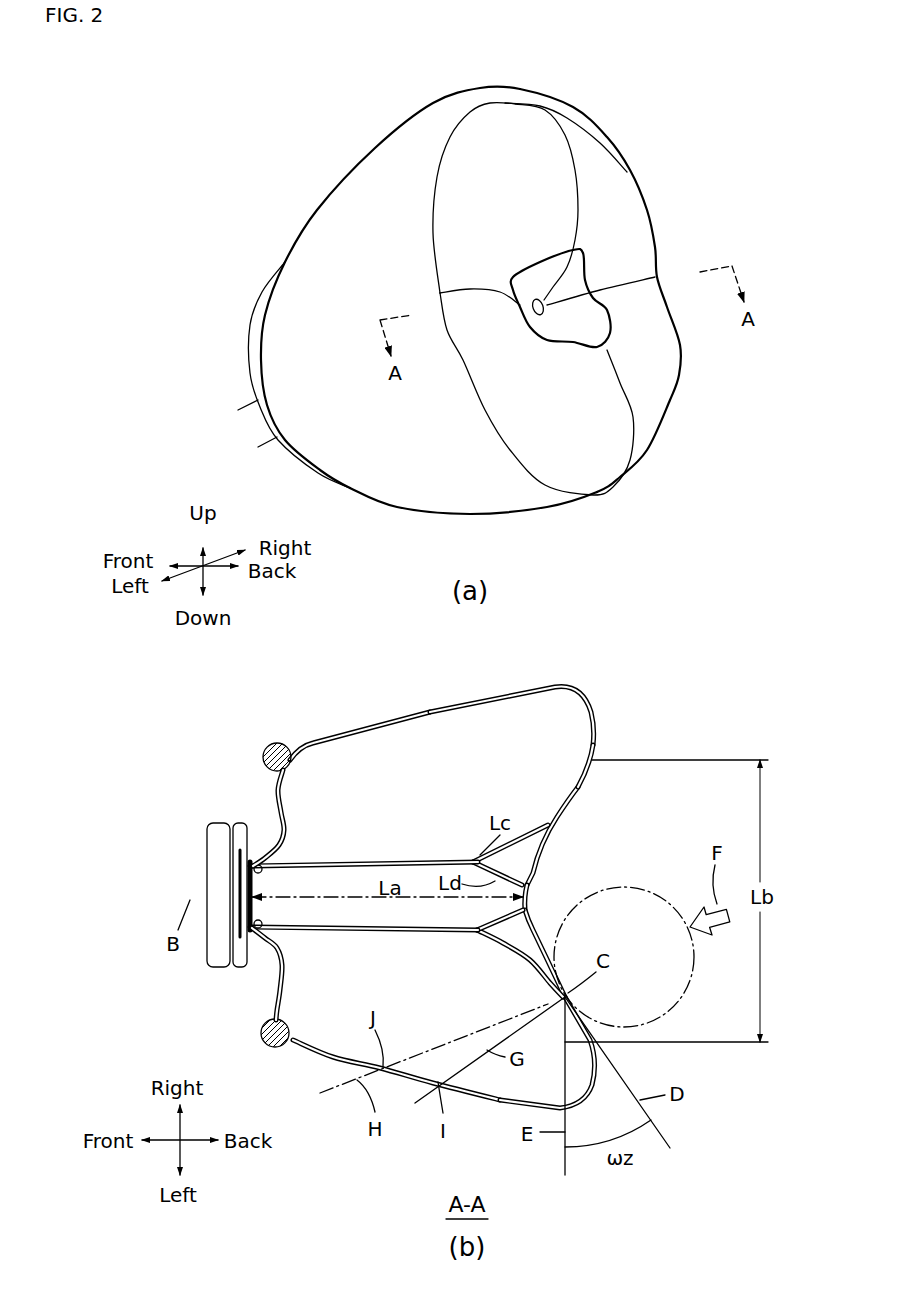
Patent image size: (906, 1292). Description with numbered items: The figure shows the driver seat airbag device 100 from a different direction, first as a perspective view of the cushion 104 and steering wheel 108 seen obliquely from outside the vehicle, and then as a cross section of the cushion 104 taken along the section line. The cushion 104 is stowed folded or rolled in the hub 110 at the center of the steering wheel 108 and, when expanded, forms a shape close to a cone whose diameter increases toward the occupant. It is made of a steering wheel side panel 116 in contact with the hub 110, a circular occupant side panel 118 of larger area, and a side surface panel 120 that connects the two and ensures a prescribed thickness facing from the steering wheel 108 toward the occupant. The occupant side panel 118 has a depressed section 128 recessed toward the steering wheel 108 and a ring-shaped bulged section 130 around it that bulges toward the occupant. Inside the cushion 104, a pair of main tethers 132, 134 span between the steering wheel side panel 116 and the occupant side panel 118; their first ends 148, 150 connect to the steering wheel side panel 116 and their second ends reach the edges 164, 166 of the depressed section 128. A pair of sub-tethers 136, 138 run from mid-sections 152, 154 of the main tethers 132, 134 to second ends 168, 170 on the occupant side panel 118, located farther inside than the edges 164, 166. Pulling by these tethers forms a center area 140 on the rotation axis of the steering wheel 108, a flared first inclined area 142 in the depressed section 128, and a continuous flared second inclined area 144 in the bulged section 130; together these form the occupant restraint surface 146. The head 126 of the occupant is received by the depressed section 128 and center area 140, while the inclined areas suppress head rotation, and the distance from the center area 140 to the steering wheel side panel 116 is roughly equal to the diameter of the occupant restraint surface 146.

The driver seat airbag device 100 is at (338, 128).
The cushion 104 is at (313, 208).
The steering wheel 108 is at (248, 323).
The hub 110 is at (228, 887).
The steering wheel side panel 116 is at (252, 915).
The occupant side panel 118 is at (494, 123).
The side surface panel 120 is at (410, 480).
The head 126 is at (621, 883).
The depressed section 128 is at (536, 275).
The bulged section 130 is at (627, 216).
The main tether 132 is at (397, 860).
The main tether 134 is at (397, 930).
The sub-tether 136 is at (540, 866).
The sub-tether 138 is at (500, 918).
The center area 140 is at (533, 320).
The first inclined area 142 is at (573, 320).
The second inclined area 144 is at (637, 308).
The occupant restraint surface 146 is at (632, 333).
The first end 148 is at (258, 857).
The first end 150 is at (260, 937).
The mid-section 152 is at (473, 860).
The mid-section 154 is at (478, 932).
The edge 164 is at (585, 293).
The edge 166 is at (518, 305).
The second end 168 is at (532, 884).
The second end 170 is at (537, 925).